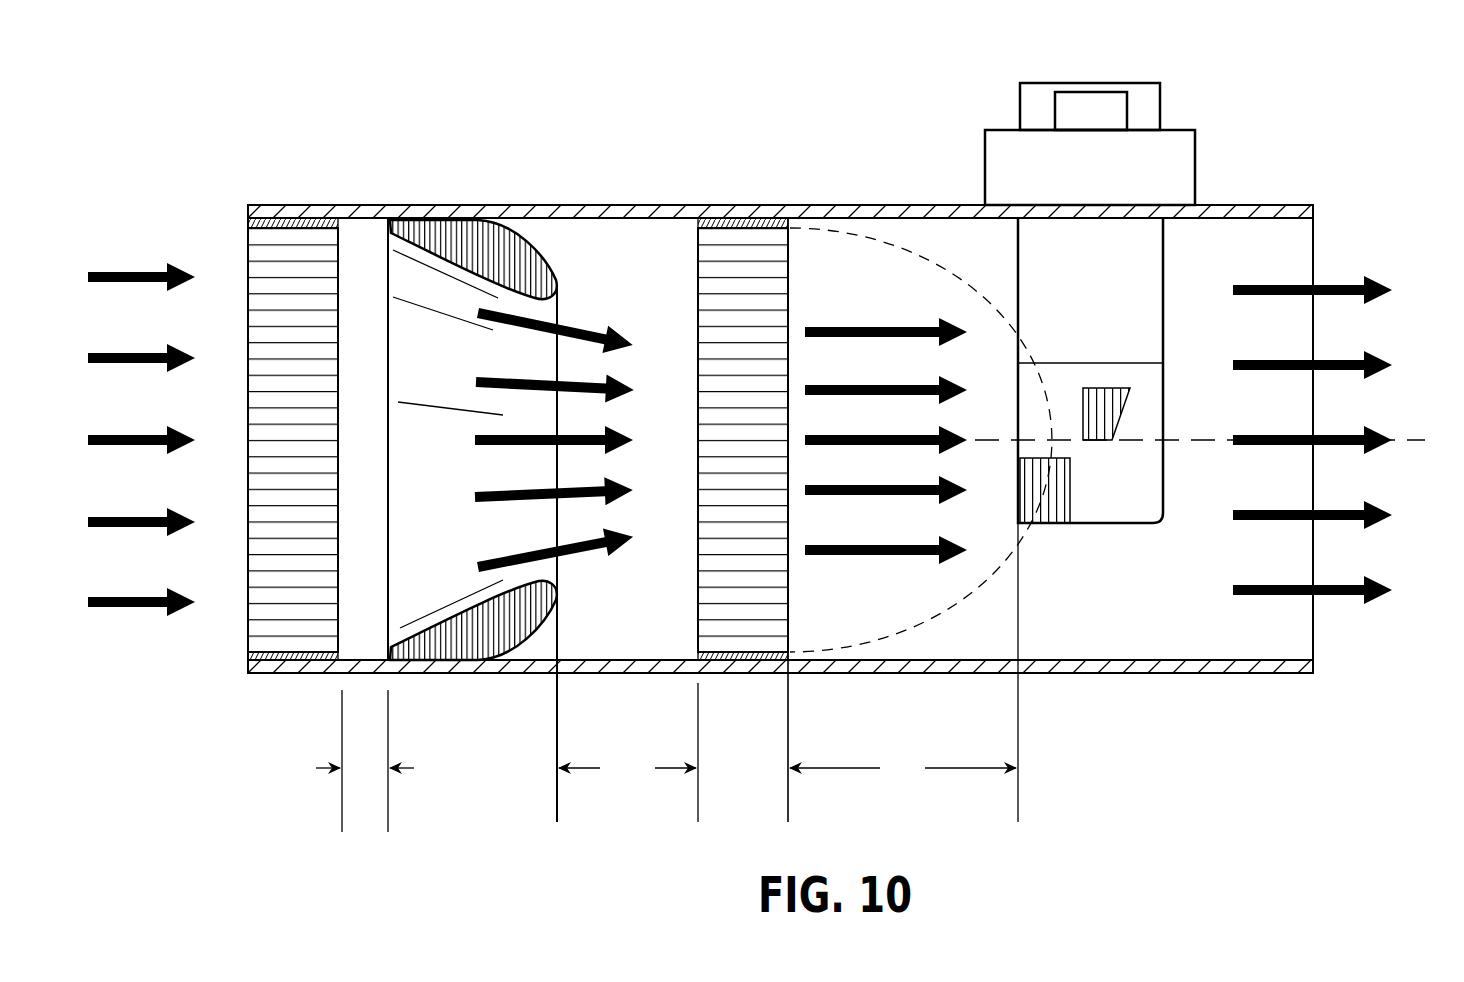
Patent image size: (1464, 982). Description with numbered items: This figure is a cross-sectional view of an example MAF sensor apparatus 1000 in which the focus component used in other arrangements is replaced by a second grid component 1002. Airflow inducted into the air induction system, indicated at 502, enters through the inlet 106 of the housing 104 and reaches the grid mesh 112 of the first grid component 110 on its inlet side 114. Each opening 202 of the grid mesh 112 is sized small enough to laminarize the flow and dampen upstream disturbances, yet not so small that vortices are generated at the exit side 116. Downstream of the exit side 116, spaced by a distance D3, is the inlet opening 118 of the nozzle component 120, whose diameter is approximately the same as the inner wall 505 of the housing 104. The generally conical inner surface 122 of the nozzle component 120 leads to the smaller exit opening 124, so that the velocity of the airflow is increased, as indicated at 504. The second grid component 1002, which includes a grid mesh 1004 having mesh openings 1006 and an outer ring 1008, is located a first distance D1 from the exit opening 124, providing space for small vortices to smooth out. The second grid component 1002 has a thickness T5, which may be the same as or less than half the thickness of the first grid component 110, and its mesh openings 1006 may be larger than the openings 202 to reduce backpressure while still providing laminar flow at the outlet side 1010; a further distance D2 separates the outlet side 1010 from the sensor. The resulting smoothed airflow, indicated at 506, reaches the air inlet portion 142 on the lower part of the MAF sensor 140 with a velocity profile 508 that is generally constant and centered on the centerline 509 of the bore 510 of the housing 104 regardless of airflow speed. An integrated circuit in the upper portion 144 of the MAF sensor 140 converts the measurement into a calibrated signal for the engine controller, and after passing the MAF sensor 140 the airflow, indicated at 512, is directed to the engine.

The MAF sensor apparatus 1000 is at (160, 43).
The housing 104 is at (597, 205).
The duct inlet 106 is at (203, 222).
The grid component 110 is at (248, 222).
The grid mesh 112 is at (238, 318).
The inlet side 114 is at (215, 470).
The exit side 116 is at (352, 358).
The inlet opening 118 is at (380, 565).
The nozzle component 120 is at (527, 630).
The conical inner surface 122 is at (455, 466).
The exit opening 124 is at (565, 366).
The opening 202 is at (248, 258).
The airflow inducted into the air induction system 502 is at (128, 260).
The increased velocity airflow 504 is at (593, 568).
The inner wall 505 is at (543, 220).
The airflow reaching the MAF sensor 506 is at (887, 308).
The velocity profile 508 is at (955, 603).
The centerline 509 is at (1168, 440).
The bore 510 is at (1143, 603).
The airflow directed to the engine 512 is at (1350, 602).
The MAF sensor 140 is at (1127, 109).
The air inlet portion 142 is at (1110, 523).
The upper portion 144 is at (1195, 130).
The second grid component 1002 is at (790, 265).
The grid mesh 1004 is at (695, 363).
The mesh openings 1006 is at (698, 266).
The outer ring 1008 is at (738, 218).
The outlet side 1010 is at (795, 452).
The first distance D1 is at (627, 769).
The distance D2 is at (903, 769).
The distance D3 is at (365, 769).
The thickness T5 is at (743, 769).